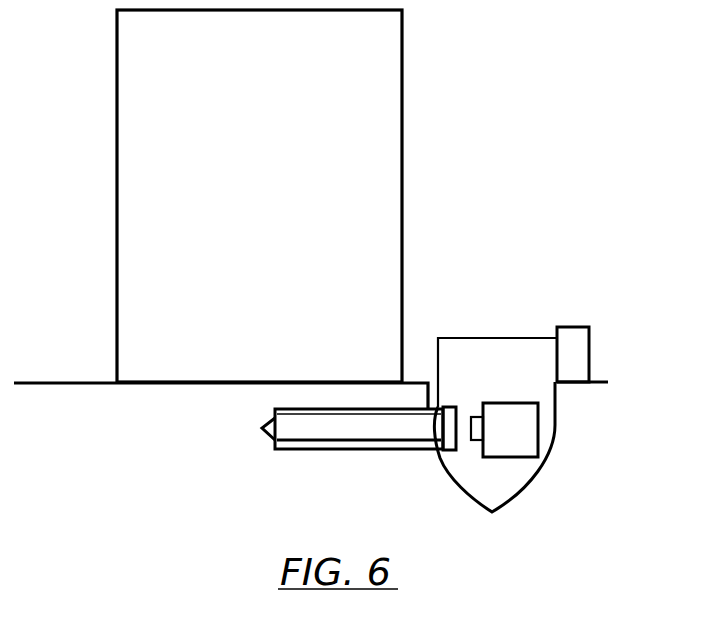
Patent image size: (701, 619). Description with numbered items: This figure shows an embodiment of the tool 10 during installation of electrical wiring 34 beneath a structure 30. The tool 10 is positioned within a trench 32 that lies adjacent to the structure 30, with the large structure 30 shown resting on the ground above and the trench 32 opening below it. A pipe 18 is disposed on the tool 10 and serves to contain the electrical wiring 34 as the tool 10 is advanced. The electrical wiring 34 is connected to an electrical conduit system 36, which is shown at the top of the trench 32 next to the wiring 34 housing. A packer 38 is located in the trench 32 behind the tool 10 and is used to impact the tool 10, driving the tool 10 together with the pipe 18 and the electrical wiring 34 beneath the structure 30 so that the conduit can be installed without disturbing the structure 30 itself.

The structure 30 is at (402, 153).
The electrical wiring 34 is at (458, 338).
The electrical conduit system 36 is at (572, 327).
The packer 38 is at (538, 428).
The trench 32 is at (548, 468).
The tool 10 is at (357, 448).
The pipe 18 is at (290, 450).